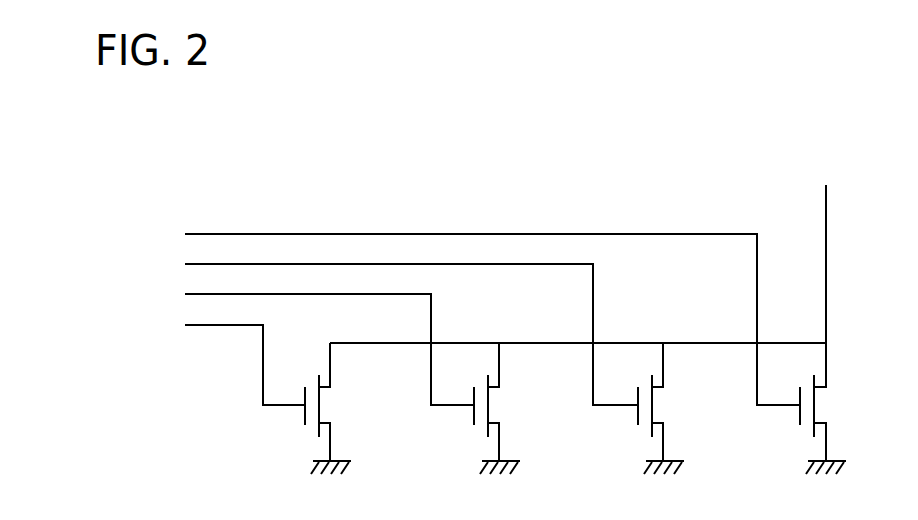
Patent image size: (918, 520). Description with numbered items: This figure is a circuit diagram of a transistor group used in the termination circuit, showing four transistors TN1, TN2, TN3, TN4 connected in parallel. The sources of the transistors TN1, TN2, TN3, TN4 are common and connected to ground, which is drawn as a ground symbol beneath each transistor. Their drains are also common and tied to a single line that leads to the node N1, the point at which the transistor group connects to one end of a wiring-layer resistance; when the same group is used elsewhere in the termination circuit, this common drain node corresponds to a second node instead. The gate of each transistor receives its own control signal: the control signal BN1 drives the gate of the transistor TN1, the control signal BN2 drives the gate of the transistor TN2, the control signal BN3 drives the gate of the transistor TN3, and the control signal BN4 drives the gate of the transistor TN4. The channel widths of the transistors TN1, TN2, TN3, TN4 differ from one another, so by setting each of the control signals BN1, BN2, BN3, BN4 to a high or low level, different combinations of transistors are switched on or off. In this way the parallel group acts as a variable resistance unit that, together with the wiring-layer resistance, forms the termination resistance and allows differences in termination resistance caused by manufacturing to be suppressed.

The node N1 is at (591, 234).
The control signal BN1 is at (167, 359).
The control signal BN2 is at (252, 344).
The control signal BN3 is at (334, 329).
The control signal BN4 is at (415, 314).
The transistor TN1 is at (298, 408).
The transistor TN2 is at (468, 408).
The transistor TN3 is at (632, 408).
The transistor TN4 is at (795, 408).